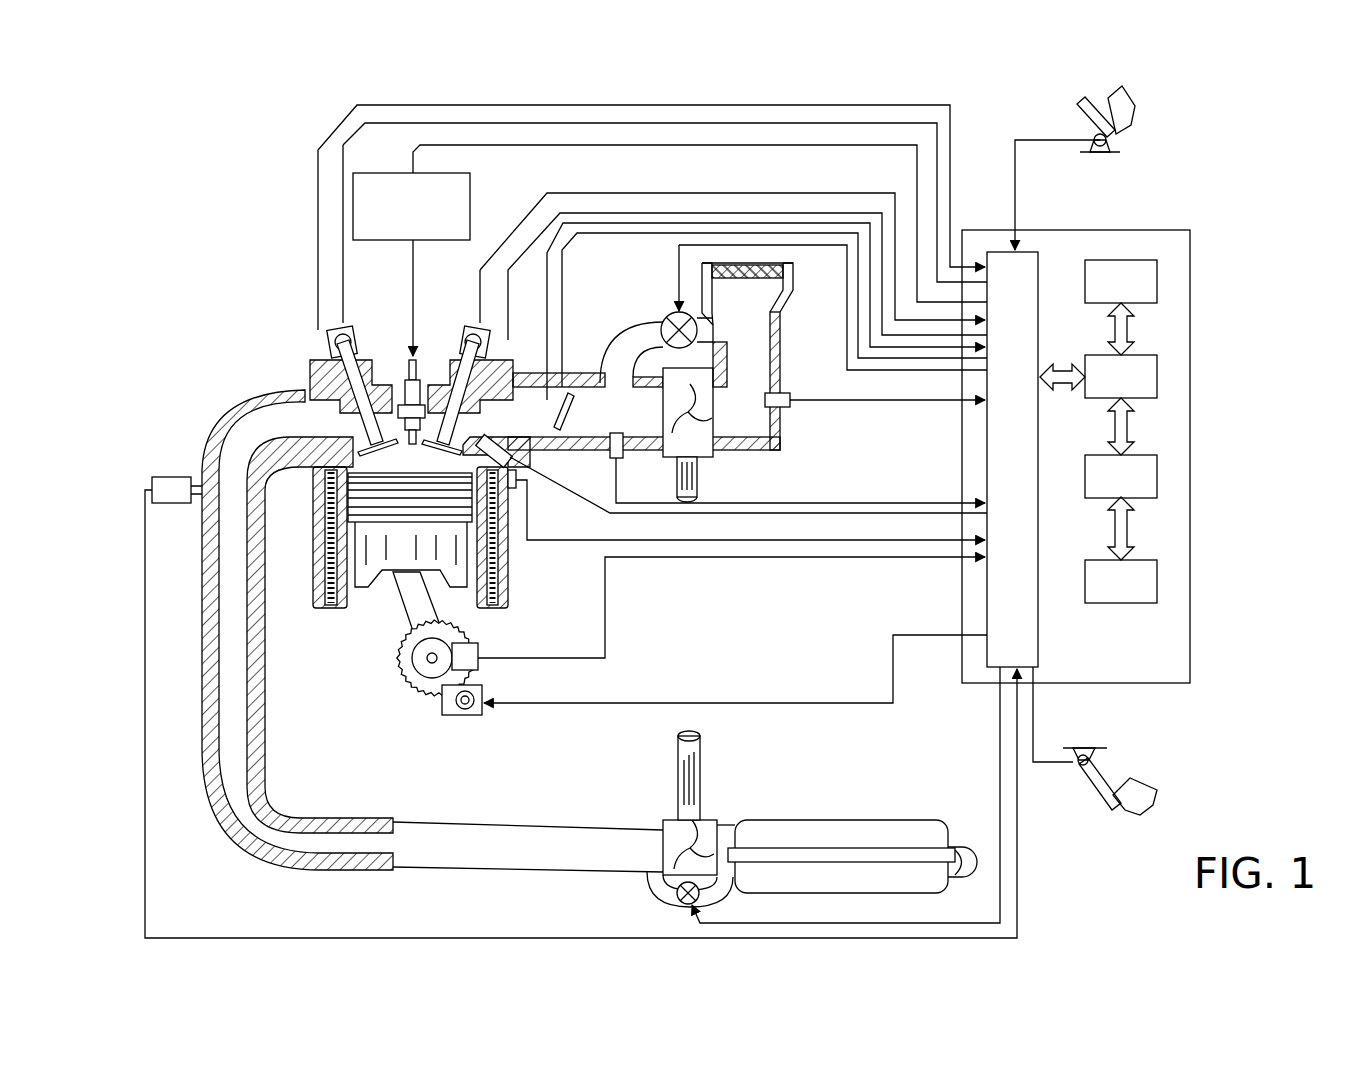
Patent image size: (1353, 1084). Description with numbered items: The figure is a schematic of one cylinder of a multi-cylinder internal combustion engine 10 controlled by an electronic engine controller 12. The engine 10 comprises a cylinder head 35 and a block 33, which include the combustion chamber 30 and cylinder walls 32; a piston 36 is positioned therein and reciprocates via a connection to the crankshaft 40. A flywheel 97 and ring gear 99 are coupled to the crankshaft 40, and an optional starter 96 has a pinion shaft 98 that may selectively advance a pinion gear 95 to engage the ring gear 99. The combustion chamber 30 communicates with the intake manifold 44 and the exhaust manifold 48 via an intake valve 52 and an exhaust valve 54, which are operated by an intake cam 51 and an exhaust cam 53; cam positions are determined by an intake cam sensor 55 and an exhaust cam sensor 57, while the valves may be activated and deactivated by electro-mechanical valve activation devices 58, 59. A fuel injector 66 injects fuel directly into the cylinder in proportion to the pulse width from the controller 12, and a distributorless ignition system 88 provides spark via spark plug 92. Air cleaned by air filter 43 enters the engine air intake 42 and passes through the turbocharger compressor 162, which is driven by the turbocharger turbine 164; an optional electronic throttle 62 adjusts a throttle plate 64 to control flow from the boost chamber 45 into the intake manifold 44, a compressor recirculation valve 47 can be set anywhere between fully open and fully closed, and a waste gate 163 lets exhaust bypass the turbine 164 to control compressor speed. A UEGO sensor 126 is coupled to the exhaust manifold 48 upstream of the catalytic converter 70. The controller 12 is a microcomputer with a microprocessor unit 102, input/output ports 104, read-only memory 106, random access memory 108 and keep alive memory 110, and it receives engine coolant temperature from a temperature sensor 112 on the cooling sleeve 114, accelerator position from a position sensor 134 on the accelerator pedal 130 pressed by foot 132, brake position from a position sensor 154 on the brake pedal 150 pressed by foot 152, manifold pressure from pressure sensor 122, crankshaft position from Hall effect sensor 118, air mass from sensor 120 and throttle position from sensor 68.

The internal combustion engine 10 is at (246, 311).
The electronic engine controller 12 is at (1190, 230).
The combustion chamber 30 is at (407, 462).
The cylinder walls 32 is at (355, 602).
The block 33 is at (316, 504).
The cylinder head 35 is at (306, 356).
The piston 36 is at (393, 555).
The crankshaft 40 is at (423, 690).
The engine air intake 42 is at (625, 287).
The air filter 43 is at (767, 280).
The intake manifold 44 is at (521, 421).
The boost chamber 45 is at (615, 421).
The compressor recirculation valve 47 is at (670, 318).
The exhaust manifold 48 is at (266, 431).
The intake cam 51 is at (478, 322).
The intake valve 52 is at (455, 426).
The exhaust cam 53 is at (343, 322).
The exhaust valve 54 is at (345, 428).
The intake cam sensor 55 is at (488, 342).
The exhaust cam sensor 57 is at (330, 345).
The valve activation device 58 is at (355, 342).
The valve activation device 59 is at (473, 350).
The electronic throttle 62 is at (574, 413).
The throttle plate 64 is at (567, 423).
The fuel injector 66 is at (515, 464).
The throttle position sensor 68 is at (542, 374).
The catalytic converter 70 is at (785, 822).
The distributorless ignition system 88 is at (370, 173).
The spark plug 92 is at (417, 360).
The pinion gear 95 is at (472, 713).
The starter 96 is at (476, 712).
The flywheel 97 is at (410, 658).
The pinion shaft 98 is at (457, 714).
The ring gear 99 is at (425, 700).
The microprocessor unit 102 is at (1157, 380).
The input/output ports 104 is at (1040, 262).
The read-only memory 106 is at (1157, 280).
The random access memory 108 is at (1157, 480).
The keep alive memory 110 is at (1157, 583).
The temperature sensor 112 is at (514, 490).
The cooling sleeve 114 is at (492, 557).
The Hall effect sensor 118 is at (478, 647).
The air mass sensor 120 is at (783, 395).
The pressure sensor 122 is at (610, 452).
The Universal Exhaust Gas Oxygen sensor 126 is at (150, 486).
The accelerator pedal 130 is at (1085, 118).
The foot 132 is at (1133, 104).
The position sensor 134 is at (1120, 140).
The brake pedal 150 is at (1104, 805).
The foot 152 is at (1140, 780).
The position sensor 154 is at (1076, 752).
The turbocharger compressor 162 is at (700, 445).
The waste gate 163 is at (680, 905).
The turbocharger turbine 164 is at (670, 820).